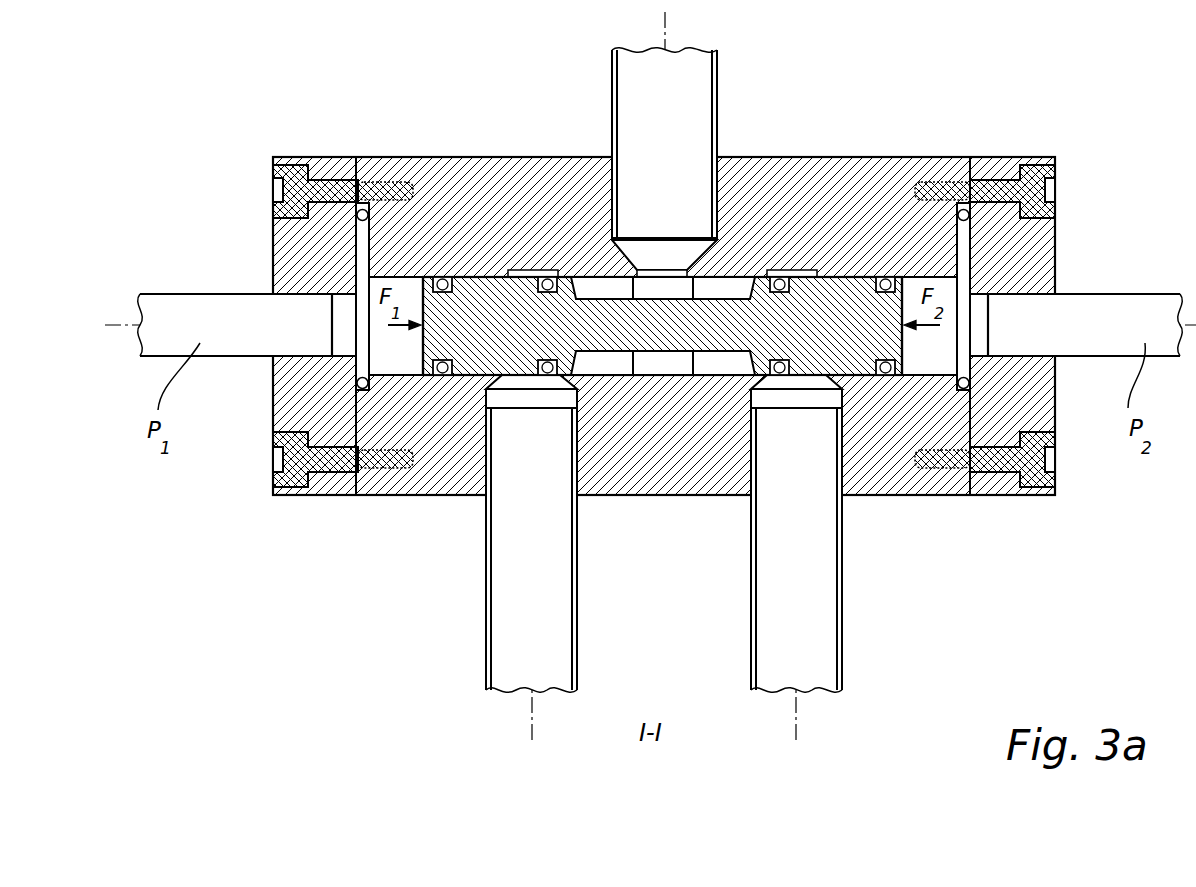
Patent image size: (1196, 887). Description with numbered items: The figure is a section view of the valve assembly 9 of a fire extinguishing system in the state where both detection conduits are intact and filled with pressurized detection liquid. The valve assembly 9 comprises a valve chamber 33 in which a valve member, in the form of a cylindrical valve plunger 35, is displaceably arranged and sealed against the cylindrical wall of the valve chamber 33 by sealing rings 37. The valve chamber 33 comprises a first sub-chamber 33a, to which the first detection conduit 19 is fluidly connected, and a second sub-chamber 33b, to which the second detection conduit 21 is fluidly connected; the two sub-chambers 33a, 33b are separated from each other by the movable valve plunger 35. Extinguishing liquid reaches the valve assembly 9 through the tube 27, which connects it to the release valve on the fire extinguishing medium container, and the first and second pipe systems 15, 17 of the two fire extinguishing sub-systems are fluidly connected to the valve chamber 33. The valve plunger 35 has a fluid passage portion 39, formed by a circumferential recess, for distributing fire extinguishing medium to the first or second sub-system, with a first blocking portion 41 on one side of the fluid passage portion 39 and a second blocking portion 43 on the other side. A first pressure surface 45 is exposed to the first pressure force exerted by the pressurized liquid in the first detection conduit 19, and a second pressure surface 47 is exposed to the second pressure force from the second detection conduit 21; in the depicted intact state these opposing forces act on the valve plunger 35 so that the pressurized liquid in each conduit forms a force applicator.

The valve assembly 9 is at (408, 157).
The first pipe system 15 is at (486, 640).
The second pipe system 17 is at (842, 625).
The first detection conduit 19 is at (178, 292).
The second detection conduit 21 is at (1145, 292).
The tube 27 is at (717, 92).
The valve chamber 33 is at (598, 290).
The first sub-chamber 33a is at (378, 342).
The second sub-chamber 33b is at (933, 362).
The cylindrical valve plunger 35 is at (692, 316).
The sealing rings 37 is at (443, 277).
The fluid passage portion 39 is at (680, 335).
The first blocking portion 41 is at (477, 360).
The second blocking portion 43 is at (853, 360).
The first pressure surface 45 is at (423, 347).
The second pressure surface 47 is at (905, 353).